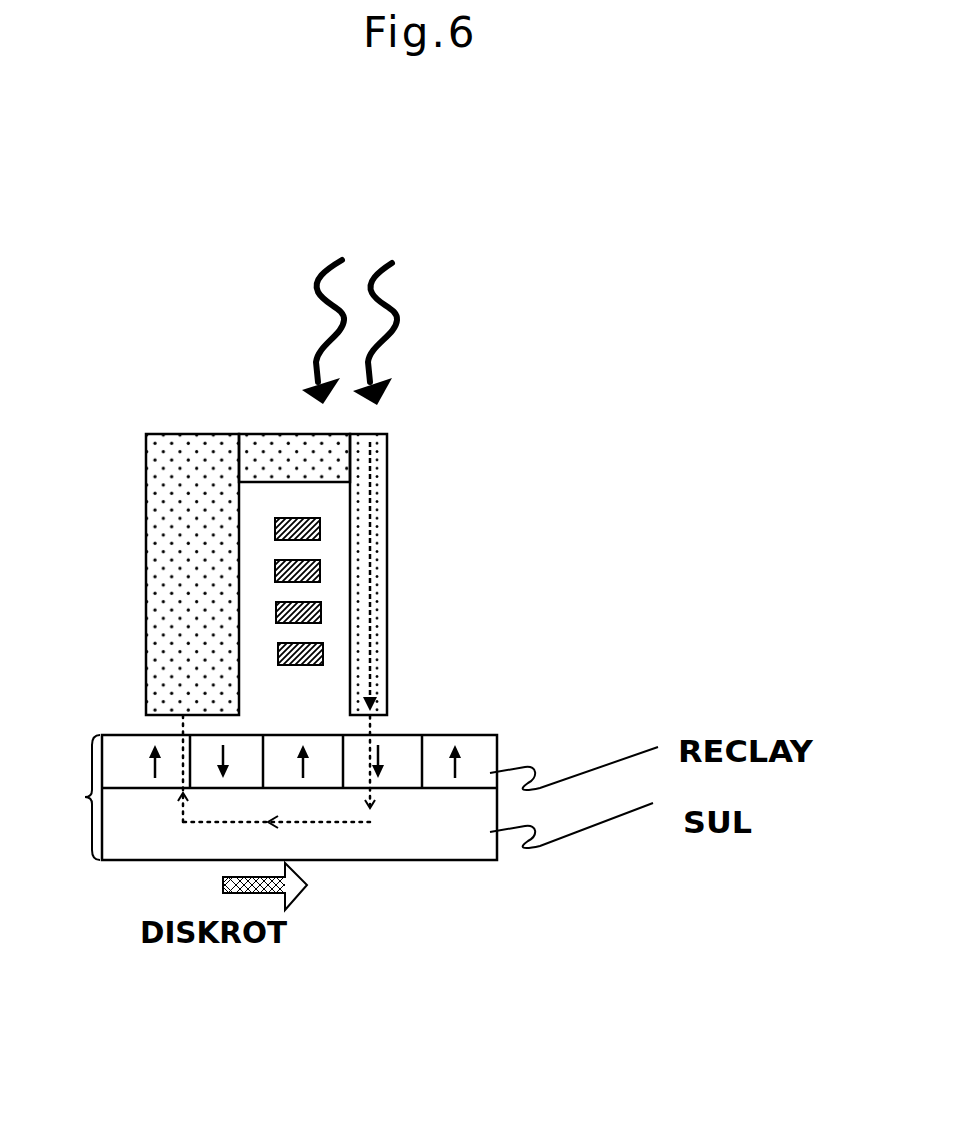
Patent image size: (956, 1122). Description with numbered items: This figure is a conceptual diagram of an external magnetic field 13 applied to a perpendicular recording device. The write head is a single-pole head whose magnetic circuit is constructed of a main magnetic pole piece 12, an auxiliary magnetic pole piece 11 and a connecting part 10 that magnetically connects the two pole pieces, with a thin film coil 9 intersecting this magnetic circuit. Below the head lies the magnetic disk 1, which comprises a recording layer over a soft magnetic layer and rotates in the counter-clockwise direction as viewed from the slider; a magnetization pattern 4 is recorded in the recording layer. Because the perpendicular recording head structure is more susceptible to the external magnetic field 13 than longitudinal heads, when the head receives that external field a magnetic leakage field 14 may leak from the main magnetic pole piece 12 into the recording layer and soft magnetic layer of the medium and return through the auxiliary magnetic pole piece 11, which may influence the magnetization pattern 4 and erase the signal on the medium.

The magnetic disk 1 is at (276, 797).
The magnetization pattern 4 is at (462, 757).
The thin film coil 9 is at (320, 525).
The connecting part 10 is at (275, 468).
The auxiliary magnetic pole piece 11 is at (173, 460).
The main magnetic pole piece 12 is at (387, 590).
The external magnetic field 13 is at (378, 332).
The magnetic leakage field 14 is at (375, 657).